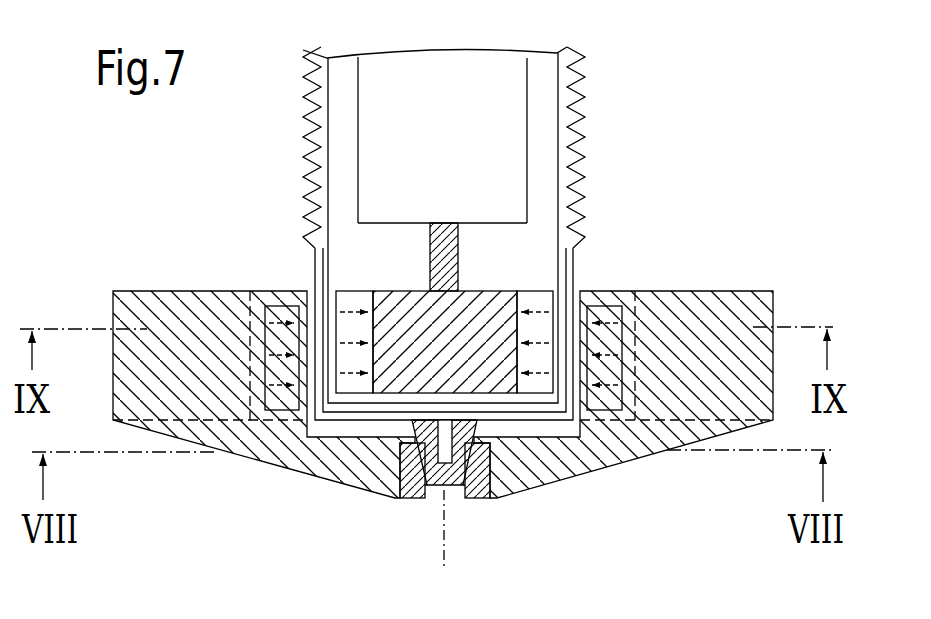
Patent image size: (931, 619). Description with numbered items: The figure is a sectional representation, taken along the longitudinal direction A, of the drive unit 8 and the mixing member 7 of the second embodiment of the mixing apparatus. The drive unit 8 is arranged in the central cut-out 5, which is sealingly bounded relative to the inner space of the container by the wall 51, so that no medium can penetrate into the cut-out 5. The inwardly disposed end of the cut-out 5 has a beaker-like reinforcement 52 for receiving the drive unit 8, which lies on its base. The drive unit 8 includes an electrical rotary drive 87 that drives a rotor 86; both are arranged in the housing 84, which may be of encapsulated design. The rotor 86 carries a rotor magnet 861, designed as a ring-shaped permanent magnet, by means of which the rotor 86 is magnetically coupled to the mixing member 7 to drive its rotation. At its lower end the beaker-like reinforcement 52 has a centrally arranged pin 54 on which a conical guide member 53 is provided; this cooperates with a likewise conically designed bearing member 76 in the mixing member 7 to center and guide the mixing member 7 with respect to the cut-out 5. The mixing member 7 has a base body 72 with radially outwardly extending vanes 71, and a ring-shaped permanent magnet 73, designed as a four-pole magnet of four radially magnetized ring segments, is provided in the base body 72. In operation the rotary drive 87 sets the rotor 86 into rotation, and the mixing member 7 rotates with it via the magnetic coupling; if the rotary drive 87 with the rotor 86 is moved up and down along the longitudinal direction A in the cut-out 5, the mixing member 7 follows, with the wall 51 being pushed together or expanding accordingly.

The cut-out 5 is at (521, 266).
The mixing member 7 is at (245, 468).
The drive unit 8 is at (350, 170).
The wall 51 is at (575, 175).
The beaker-like reinforcement 52 is at (572, 275).
The guide member 53 is at (452, 490).
The pin 54 is at (502, 490).
The vanes 71 is at (703, 423).
The base body 72 is at (393, 485).
The ring-shaped permanent magnet 73 is at (607, 310).
The bearing member 76 is at (415, 485).
The housing 84 is at (560, 127).
The rotor 86 is at (382, 288).
The electrical rotary drive 87 is at (462, 125).
The rotor magnet 861 is at (345, 292).
The longitudinal direction A is at (443, 548).